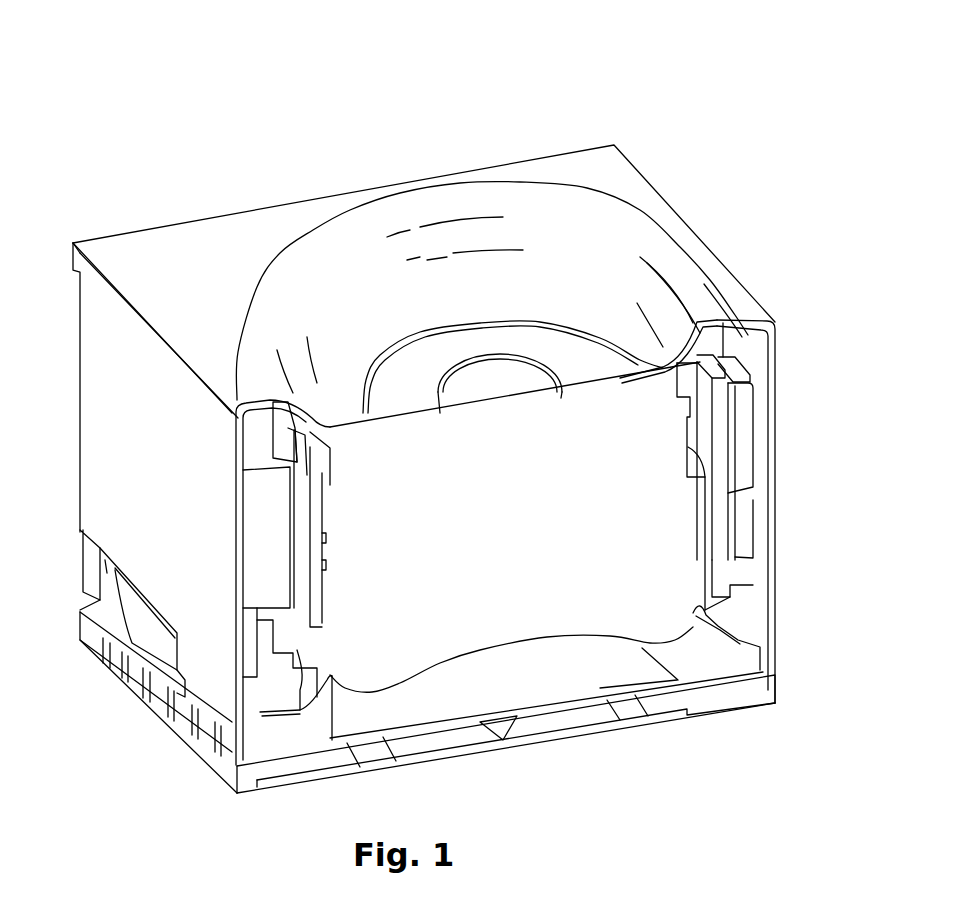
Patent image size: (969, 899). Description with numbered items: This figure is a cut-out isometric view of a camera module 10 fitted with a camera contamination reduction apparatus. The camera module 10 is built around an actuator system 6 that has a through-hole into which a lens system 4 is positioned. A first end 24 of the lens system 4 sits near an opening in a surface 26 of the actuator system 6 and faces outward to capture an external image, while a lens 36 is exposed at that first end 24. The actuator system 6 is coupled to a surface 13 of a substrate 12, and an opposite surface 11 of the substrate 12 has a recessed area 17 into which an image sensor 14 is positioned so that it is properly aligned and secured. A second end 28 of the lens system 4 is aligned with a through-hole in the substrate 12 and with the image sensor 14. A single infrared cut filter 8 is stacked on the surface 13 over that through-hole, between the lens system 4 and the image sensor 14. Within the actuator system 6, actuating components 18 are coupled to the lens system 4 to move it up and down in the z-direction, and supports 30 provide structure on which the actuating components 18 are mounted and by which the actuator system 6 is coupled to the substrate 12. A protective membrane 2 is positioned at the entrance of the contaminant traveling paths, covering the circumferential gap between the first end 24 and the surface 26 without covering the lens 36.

The camera module 10 is at (629, 80).
The protective membrane 2 is at (313, 237).
The lens system 4 is at (523, 420).
The actuator system 6 is at (143, 227).
The infrared cut filter 8 is at (550, 683).
The surface 11 is at (775, 707).
The substrate 12 is at (732, 703).
The surface 13 is at (720, 677).
The image sensor 14 is at (480, 742).
The recessed area 17 is at (260, 783).
The actuating components 18 is at (293, 637).
The first end 24 is at (430, 360).
The surface 26 is at (625, 180).
The second end 28 is at (627, 643).
The supports 30 is at (748, 633).
The lens 36 is at (503, 377).